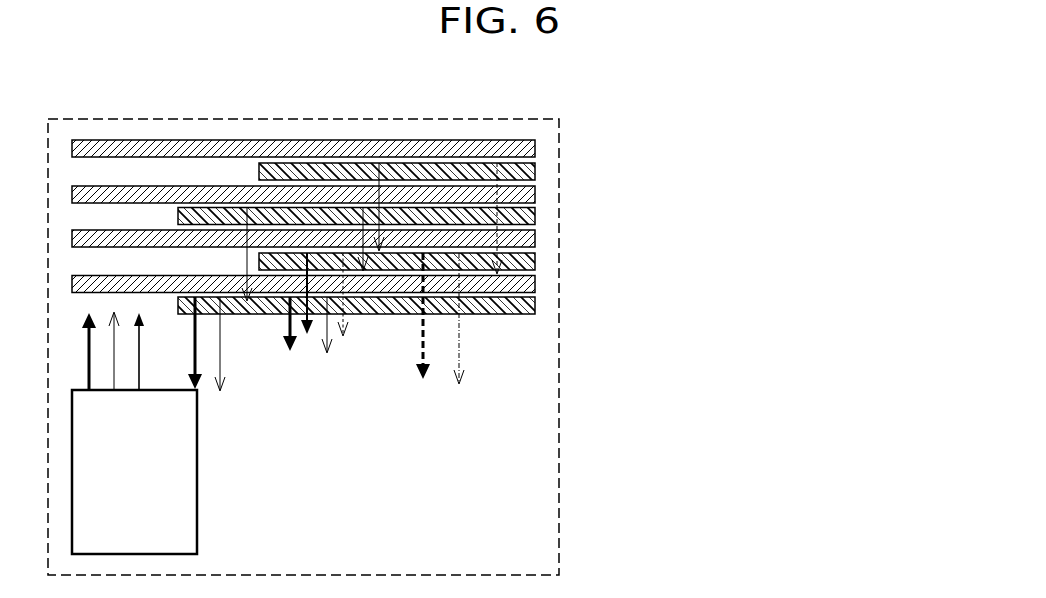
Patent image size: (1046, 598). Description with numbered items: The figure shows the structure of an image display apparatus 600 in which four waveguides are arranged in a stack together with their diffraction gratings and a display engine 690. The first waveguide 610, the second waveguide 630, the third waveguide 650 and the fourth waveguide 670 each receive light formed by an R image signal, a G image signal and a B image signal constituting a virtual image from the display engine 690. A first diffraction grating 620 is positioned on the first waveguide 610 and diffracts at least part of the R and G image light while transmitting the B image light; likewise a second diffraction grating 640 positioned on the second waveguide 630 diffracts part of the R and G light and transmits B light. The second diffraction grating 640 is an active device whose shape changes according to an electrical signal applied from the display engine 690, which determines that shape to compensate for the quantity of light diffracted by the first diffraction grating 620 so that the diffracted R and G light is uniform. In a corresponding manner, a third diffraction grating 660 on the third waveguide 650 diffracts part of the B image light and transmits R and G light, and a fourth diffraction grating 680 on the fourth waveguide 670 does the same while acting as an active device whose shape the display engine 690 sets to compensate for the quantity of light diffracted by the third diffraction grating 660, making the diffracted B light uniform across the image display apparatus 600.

The image display apparatus 600 is at (492, 118).
The first waveguide 610 is at (535, 283).
The first diffraction grating 620 is at (535, 305).
The second waveguide 630 is at (535, 238).
The second diffraction grating 640 is at (535, 261).
The third waveguide 650 is at (535, 194).
The third diffraction grating 660 is at (535, 215).
The fourth waveguide 670 is at (535, 149).
The fourth diffraction grating 680 is at (535, 171).
The display engine 690 is at (134, 472).